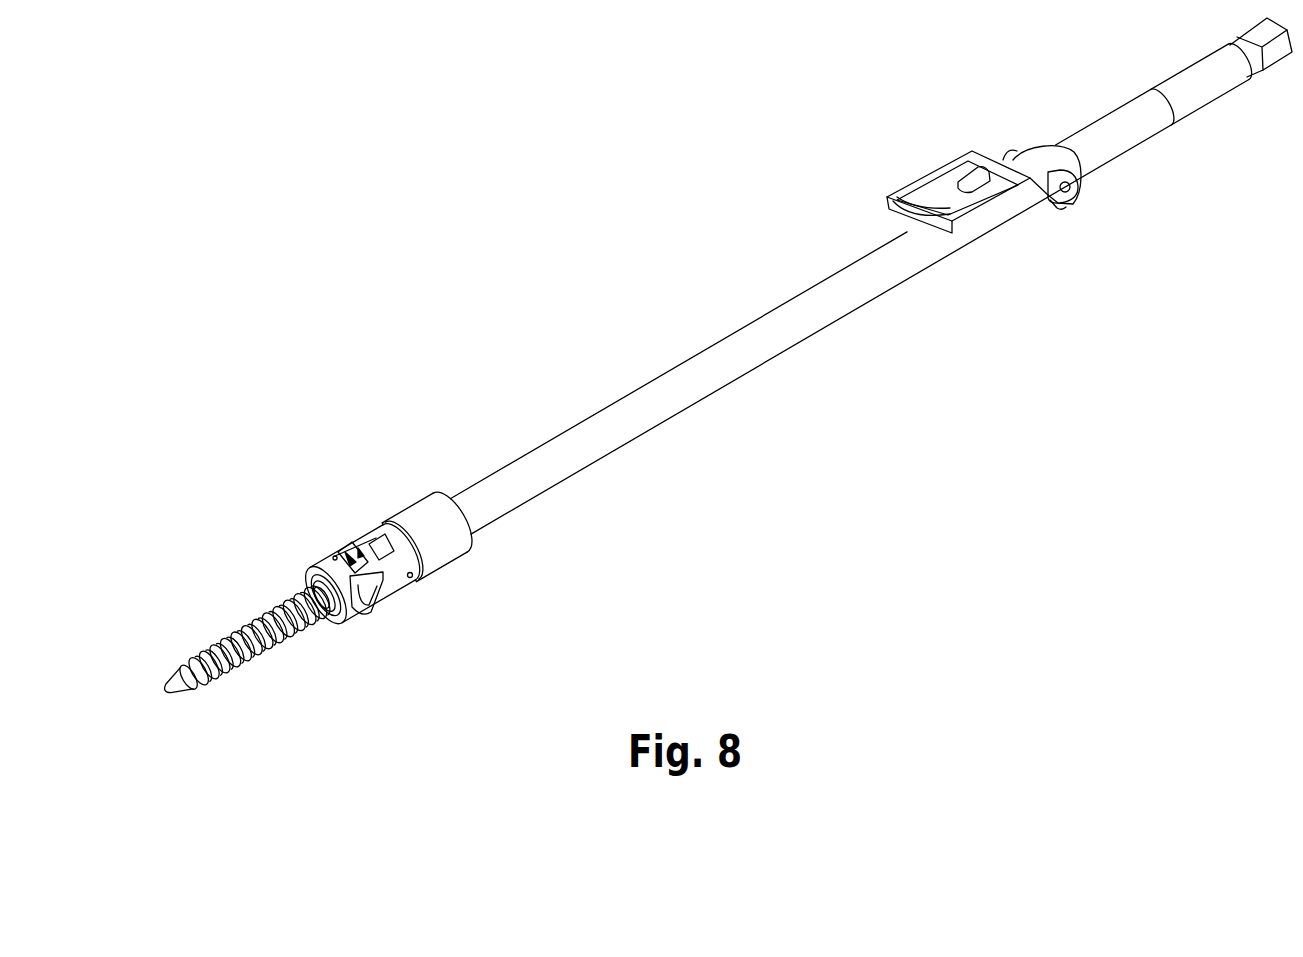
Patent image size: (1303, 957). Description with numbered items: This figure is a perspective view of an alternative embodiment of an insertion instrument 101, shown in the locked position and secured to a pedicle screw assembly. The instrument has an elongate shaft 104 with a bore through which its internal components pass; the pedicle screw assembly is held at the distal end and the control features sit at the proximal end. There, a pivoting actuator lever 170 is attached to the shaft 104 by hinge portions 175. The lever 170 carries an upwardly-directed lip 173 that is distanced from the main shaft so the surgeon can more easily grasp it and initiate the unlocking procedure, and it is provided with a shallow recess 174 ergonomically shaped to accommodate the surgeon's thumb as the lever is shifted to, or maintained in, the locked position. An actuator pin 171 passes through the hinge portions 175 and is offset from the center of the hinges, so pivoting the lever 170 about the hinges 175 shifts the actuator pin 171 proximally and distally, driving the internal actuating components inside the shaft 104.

The insertion instrument 101 is at (607, 198).
The elongate shaft 104 is at (765, 362).
The actuator lever 170 is at (918, 108).
The actuator pin 171 is at (1118, 198).
The upwardly-directed lip 173 is at (890, 211).
The shallow recess 174 is at (946, 188).
The hinge portions 175 is at (1067, 212).